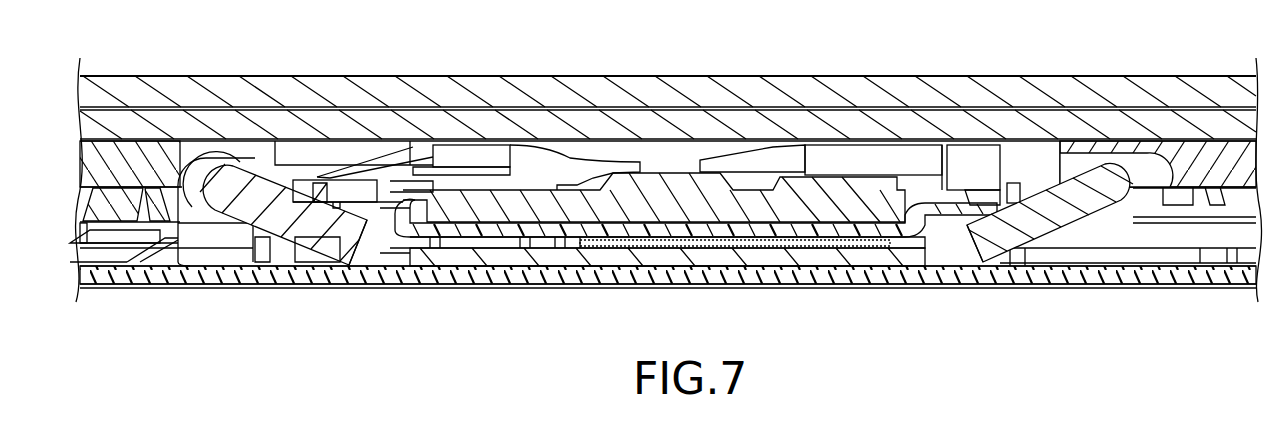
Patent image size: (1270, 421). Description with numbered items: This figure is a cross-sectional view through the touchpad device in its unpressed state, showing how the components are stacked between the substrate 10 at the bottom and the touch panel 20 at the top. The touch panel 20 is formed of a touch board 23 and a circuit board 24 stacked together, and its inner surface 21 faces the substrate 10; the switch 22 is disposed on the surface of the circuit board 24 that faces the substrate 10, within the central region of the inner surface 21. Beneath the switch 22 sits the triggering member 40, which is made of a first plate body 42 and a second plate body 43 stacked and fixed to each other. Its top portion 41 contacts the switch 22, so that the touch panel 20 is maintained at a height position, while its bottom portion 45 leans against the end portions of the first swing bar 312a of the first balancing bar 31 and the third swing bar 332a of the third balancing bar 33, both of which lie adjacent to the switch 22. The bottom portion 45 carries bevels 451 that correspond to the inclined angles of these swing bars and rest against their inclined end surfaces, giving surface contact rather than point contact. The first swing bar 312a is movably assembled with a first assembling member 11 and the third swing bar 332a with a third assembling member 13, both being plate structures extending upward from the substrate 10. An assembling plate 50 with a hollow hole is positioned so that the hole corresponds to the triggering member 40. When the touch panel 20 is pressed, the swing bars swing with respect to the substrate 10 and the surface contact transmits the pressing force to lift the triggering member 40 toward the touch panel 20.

The substrate 10 is at (205, 272).
The first assembling member 11 is at (322, 197).
The third assembling member 13 is at (1012, 160).
The touch panel 20 is at (668, 171).
The inner surface 21 is at (1038, 150).
The switch 22 is at (667, 168).
The touch board 23 is at (913, 90).
The circuit board 24 is at (957, 122).
The first balancing bar 31 is at (195, 160).
The first swing bar 312a is at (286, 262).
The third balancing bar 33 is at (1125, 160).
The third swing bar 332a is at (1080, 217).
The triggering member 40 is at (696, 290).
The top portion 41 is at (657, 168).
The first plate body 42 is at (505, 212).
The second plate body 43 is at (547, 229).
The bottom portion 45 is at (457, 250).
The bevel 451 is at (345, 222).
The assembling plate 50 is at (115, 165).